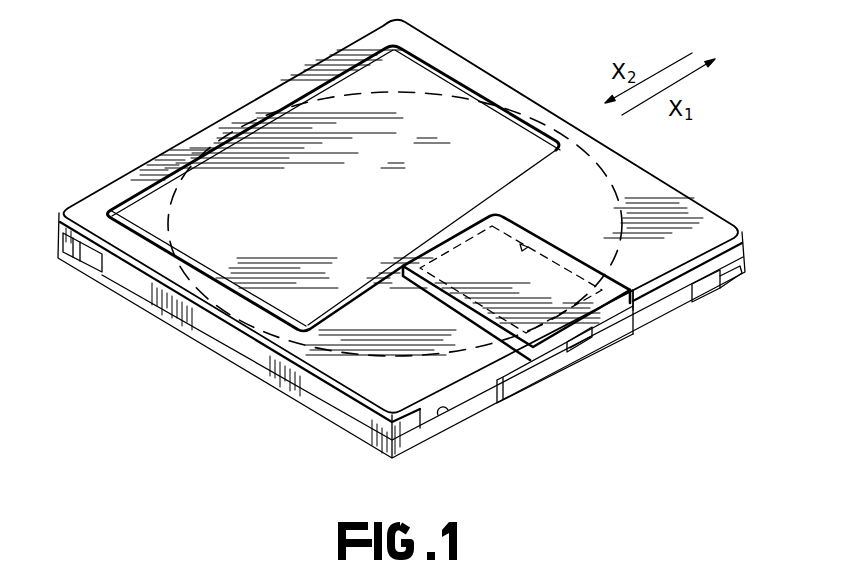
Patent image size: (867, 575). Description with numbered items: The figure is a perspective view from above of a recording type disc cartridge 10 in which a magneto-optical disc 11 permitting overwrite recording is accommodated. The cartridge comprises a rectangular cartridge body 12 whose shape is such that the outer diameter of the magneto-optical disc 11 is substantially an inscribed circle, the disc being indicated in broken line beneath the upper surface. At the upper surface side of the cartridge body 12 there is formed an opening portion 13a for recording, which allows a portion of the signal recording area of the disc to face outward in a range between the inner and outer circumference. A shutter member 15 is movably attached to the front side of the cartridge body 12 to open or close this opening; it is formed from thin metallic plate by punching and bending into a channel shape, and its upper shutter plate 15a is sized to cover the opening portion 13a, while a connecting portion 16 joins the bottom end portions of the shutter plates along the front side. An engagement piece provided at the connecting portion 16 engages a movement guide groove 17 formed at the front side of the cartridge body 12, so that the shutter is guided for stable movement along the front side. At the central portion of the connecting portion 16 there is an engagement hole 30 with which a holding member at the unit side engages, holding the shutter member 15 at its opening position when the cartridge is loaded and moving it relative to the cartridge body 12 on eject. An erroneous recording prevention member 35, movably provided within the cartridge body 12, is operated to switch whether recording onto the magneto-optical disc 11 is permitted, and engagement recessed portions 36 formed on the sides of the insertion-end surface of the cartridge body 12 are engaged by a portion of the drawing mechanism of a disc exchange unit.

The disc cartridge 10 is at (542, 91).
The magneto-optical disc 11 is at (466, 63).
The cartridge body 12 is at (713, 213).
The opening portion for recording 13a is at (536, 243).
The shutter member 15 is at (546, 367).
The shutter plate 15a is at (455, 242).
The connecting portion 16 is at (628, 323).
The movement guide groove 17 is at (445, 412).
The engagement hole 30 is at (588, 348).
The erroneous recording prevention member 35 is at (88, 262).
The engagement recessed portion 36 is at (716, 287).